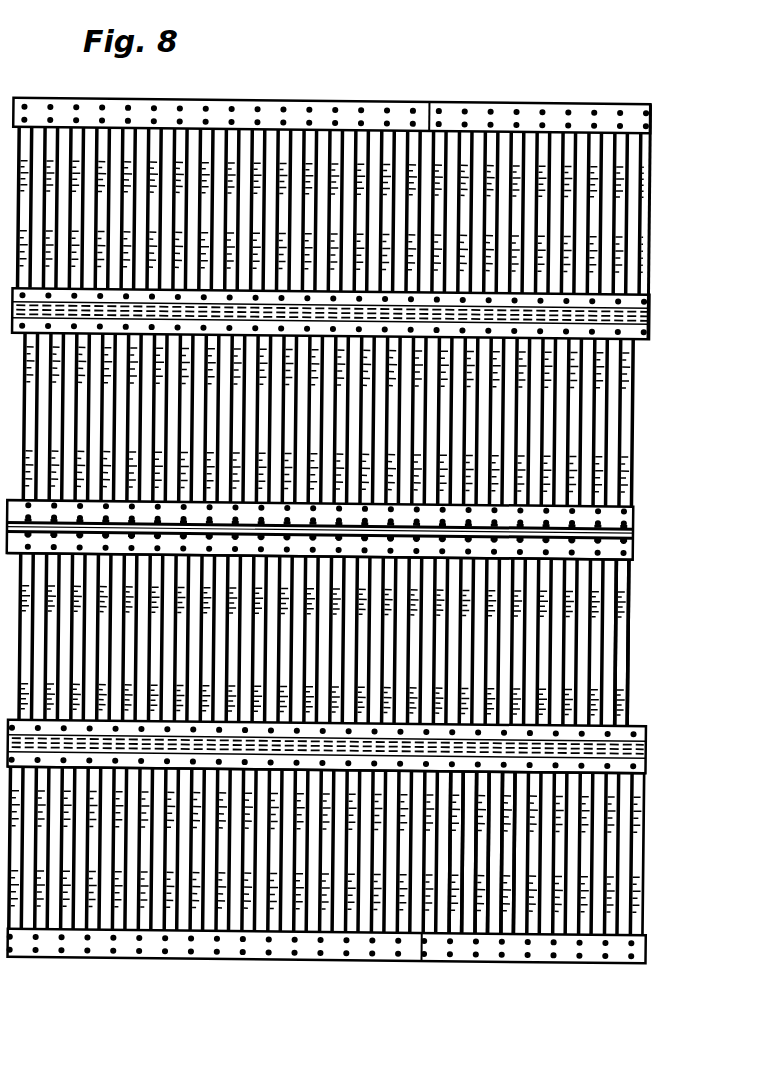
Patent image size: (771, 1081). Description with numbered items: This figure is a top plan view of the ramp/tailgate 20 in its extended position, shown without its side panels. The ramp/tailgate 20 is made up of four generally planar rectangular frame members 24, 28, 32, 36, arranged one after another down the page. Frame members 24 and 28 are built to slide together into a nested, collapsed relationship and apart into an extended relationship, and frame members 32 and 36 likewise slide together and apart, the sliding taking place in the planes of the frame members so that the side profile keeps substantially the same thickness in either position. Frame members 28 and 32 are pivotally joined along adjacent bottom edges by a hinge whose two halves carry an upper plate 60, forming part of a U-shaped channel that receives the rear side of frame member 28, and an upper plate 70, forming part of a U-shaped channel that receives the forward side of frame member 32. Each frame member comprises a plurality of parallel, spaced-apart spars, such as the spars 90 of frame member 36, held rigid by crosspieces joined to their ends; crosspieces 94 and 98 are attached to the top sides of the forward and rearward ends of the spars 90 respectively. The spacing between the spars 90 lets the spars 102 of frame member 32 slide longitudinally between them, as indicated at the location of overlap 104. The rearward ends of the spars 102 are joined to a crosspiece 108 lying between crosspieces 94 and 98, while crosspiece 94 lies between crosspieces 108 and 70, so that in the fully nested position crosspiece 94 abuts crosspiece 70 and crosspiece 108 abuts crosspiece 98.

The ramp/tailgate 20 is at (228, 980).
The frame member 24 is at (660, 226).
The frame member 28 is at (643, 392).
The frame member 32 is at (374, 643).
The frame member 36 is at (362, 904).
The upper crosspiece or plate 60 is at (620, 517).
The upper crosspiece or plate 70 is at (618, 548).
The spars 90 is at (455, 905).
The crosspiece 94 is at (640, 727).
The crosspiece 98 is at (618, 952).
The spars 102 is at (603, 646).
The location of overlap 104 is at (653, 752).
The crosspiece 108 is at (612, 770).